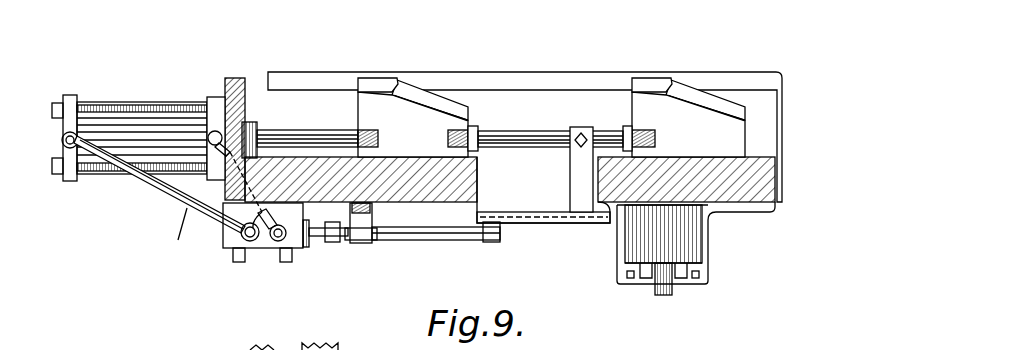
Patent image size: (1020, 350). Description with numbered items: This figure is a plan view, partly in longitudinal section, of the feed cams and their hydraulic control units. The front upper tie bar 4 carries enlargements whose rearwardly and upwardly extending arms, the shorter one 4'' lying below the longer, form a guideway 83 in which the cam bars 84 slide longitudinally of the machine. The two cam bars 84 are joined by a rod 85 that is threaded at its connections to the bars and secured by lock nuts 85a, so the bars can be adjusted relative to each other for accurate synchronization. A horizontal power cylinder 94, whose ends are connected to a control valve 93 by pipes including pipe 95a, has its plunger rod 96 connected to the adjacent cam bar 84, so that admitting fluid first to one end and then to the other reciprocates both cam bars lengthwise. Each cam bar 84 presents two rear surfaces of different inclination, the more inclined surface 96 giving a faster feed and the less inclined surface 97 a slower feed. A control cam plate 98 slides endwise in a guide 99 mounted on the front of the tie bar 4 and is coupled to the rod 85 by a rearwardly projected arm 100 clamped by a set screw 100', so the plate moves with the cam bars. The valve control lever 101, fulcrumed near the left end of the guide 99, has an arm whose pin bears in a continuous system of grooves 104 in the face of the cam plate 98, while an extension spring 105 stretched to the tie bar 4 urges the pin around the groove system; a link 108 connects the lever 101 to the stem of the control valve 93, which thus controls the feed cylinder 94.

The front upper tie bar 4 is at (518, 181).
The shorter arm 4'' is at (796, 69).
The guideway 83 is at (762, 130).
The cam bar 84 is at (398, 112).
The rod 85 is at (525, 136).
The lock nuts 85a is at (478, 133).
The control valve 93 is at (265, 248).
The power cylinder 94 is at (143, 142).
The pipe 95a is at (240, 225).
The rod (of cylinder) / more inclined cam surface 96 is at (312, 133).
The less inclined cam surface 97 is at (370, 85).
The control cam plate 98 is at (540, 212).
The guide 99 is at (423, 228).
The rearwardly projected arm 100 is at (558, 236).
The set screw 100' is at (599, 155).
The valve control lever 101 is at (362, 247).
The grooves 104 is at (588, 205).
The extension spring 105 is at (492, 222).
The link 108 is at (318, 240).